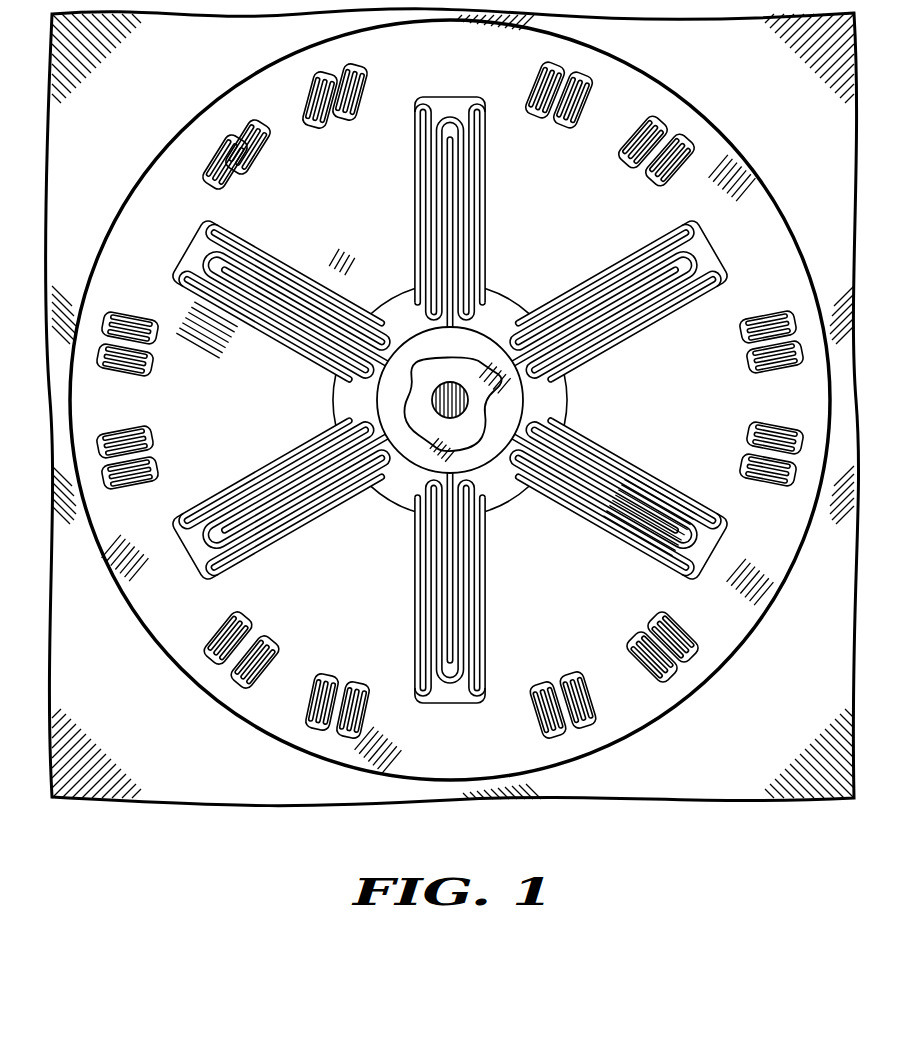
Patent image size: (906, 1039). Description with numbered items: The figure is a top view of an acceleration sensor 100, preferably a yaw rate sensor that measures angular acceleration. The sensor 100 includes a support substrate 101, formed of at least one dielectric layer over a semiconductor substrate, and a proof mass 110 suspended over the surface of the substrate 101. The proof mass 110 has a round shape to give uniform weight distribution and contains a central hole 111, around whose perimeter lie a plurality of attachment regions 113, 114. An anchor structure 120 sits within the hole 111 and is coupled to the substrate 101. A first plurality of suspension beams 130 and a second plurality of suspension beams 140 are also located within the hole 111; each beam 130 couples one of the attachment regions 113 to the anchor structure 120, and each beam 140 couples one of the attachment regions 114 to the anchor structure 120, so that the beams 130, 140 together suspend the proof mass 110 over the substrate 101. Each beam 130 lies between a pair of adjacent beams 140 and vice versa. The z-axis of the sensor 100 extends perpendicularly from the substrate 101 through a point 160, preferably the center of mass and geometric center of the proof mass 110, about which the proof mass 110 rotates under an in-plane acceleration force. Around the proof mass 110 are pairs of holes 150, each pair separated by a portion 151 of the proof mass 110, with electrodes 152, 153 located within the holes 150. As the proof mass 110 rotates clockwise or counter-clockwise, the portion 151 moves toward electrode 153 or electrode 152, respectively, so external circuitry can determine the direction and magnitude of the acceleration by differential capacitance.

The acceleration sensor 100 is at (332, 890).
The support substrate 101 is at (792, 741).
The proof mass 110 is at (153, 636).
The hole 111 is at (472, 393).
The attachment region 113 is at (472, 427).
The attachment region 114 is at (492, 282).
The anchor structure 120 is at (399, 368).
The first plurality of suspension beams 130 is at (630, 338).
The second plurality of suspension beams 140 is at (485, 196).
The pairs of holes 150 is at (457, 400).
The portion of proof mass 151 is at (457, 400).
The electrode 152 is at (450, 400).
The electrode 153 is at (255, 125).
The point 160 is at (428, 378).